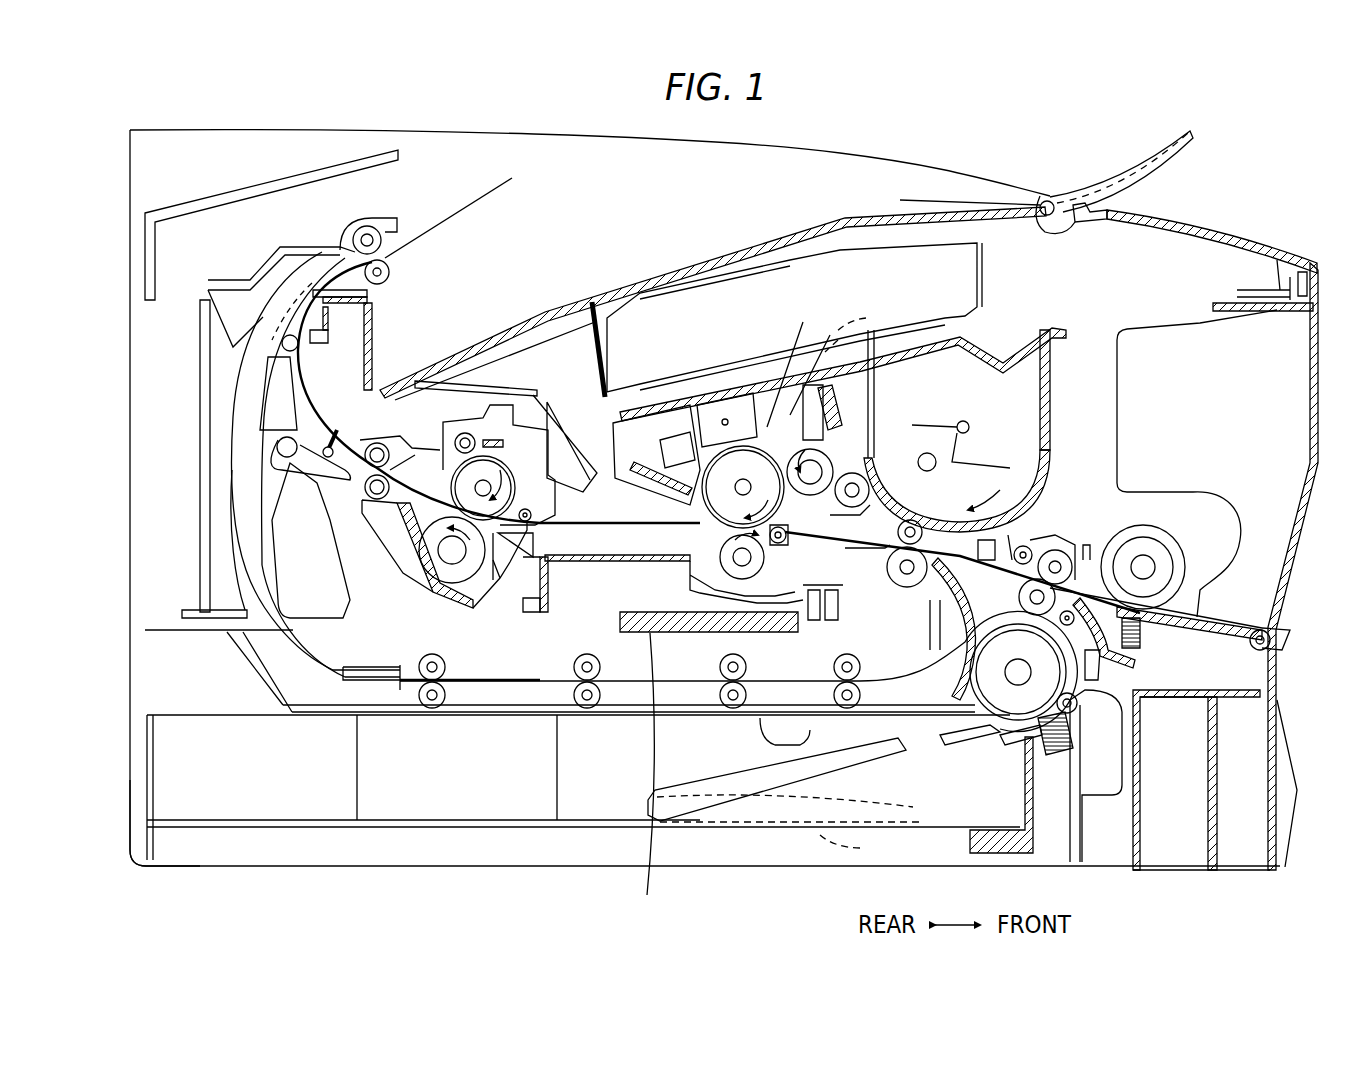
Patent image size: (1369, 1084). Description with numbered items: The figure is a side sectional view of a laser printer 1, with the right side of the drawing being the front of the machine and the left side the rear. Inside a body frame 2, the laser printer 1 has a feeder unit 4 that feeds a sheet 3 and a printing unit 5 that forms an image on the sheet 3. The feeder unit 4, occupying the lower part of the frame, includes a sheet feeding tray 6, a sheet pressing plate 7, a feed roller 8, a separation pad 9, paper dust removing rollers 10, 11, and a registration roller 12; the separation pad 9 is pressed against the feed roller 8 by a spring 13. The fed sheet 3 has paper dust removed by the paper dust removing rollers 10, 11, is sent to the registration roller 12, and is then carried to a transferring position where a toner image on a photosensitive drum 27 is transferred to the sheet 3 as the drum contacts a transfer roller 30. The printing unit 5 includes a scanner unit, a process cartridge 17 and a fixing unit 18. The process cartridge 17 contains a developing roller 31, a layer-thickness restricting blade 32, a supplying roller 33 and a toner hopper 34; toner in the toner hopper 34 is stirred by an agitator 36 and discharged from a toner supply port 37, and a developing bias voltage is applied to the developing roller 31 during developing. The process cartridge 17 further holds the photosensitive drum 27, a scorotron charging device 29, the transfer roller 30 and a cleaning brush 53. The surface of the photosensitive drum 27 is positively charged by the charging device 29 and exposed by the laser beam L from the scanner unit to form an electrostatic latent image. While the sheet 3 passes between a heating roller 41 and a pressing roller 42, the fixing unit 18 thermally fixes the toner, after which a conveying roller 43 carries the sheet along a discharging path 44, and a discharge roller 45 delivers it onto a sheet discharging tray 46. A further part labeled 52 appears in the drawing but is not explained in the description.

The laser printer 1 is at (740, 923).
The body frame 2 is at (130, 530).
The sheet 3 is at (465, 205).
The feeder unit 4 is at (213, 710).
The printing unit 5 is at (618, 565).
The sheet feeding tray 6 is at (140, 768).
The sheet pressing plate 7 is at (815, 720).
The feed roller 8 is at (957, 660).
The separation pad 9 is at (1012, 742).
The paper dust removing roller 10 is at (1133, 695).
The paper dust removing roller 11 is at (1058, 548).
The registration roller 12 is at (890, 545).
The spring 13 is at (1022, 758).
The process cartridge 17 is at (1010, 323).
The fixing unit 18 is at (530, 540).
The photosensitive drum 27 is at (712, 522).
The scorotron charging device 29 is at (740, 448).
The transfer roller 30 is at (768, 632).
The developing roller 31 is at (818, 448).
The layer-thickness restricting blade 32 is at (835, 420).
The supplying roller 33 is at (867, 475).
The toner hopper 34 is at (1050, 395).
The agitator 36 is at (995, 465).
The toner supply port 37 is at (880, 432).
The heating roller 41 is at (518, 462).
The pressing roller 42 is at (465, 605).
The conveying roller 43 is at (398, 472).
The discharging path 44 is at (300, 387).
The discharge roller 45 is at (355, 240).
The sheet discharging tray 46 is at (538, 312).
The lower guide 52 is at (639, 785).
The cleaning brush 53 is at (670, 452).
The laser beam L is at (826, 363).